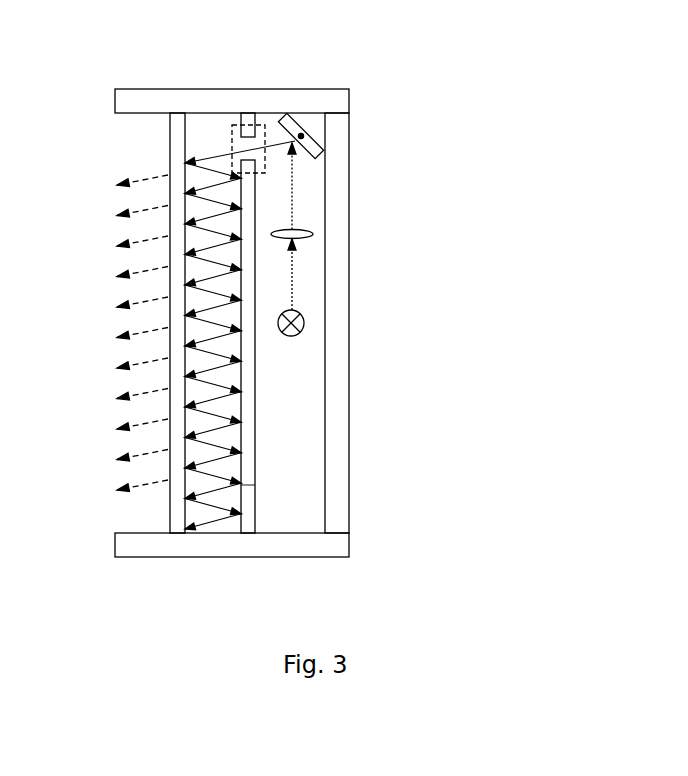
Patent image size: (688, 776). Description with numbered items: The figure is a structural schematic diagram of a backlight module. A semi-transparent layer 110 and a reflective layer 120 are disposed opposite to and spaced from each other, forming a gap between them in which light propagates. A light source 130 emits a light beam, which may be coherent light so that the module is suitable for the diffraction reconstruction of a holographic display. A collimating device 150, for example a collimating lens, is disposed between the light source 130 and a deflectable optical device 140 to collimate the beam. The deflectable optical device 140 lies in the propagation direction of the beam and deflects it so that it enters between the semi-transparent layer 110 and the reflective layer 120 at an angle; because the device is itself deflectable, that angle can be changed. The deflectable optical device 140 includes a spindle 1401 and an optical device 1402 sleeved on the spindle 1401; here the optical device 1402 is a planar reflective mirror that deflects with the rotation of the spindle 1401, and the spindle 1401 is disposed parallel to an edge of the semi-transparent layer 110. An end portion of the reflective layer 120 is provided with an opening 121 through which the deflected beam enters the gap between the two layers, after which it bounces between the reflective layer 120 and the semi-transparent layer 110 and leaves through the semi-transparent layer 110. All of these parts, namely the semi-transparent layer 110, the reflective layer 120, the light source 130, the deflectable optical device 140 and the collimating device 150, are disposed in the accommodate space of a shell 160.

The semi-transparent layer 110 is at (178, 122).
The reflective layer 120 is at (252, 433).
The opening 121 is at (260, 123).
The light source 130 is at (302, 318).
The deflectable optical device 140 is at (373, 122).
The spindle 1401 is at (303, 133).
The optical device 1402 is at (311, 146).
The collimating device 150 is at (297, 232).
The shell 160 is at (208, 543).